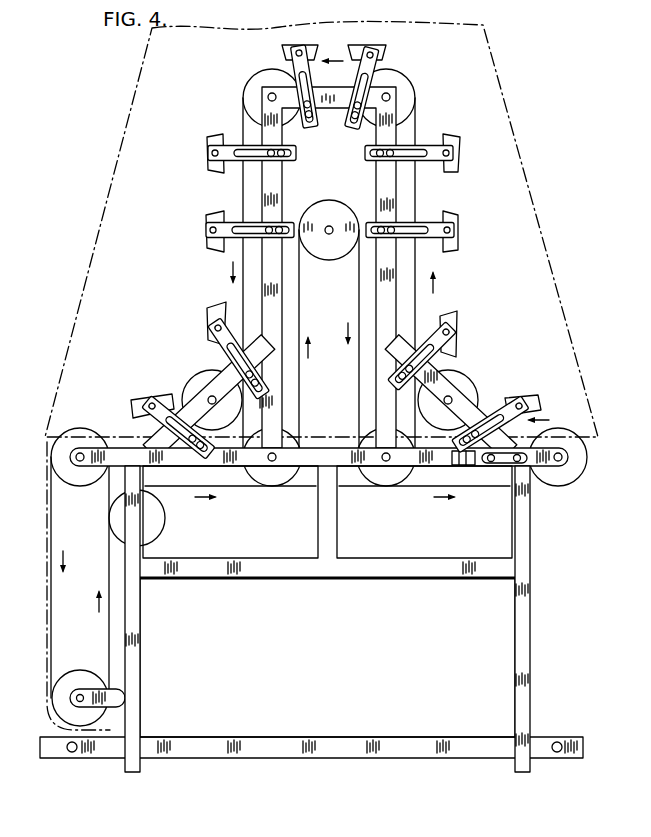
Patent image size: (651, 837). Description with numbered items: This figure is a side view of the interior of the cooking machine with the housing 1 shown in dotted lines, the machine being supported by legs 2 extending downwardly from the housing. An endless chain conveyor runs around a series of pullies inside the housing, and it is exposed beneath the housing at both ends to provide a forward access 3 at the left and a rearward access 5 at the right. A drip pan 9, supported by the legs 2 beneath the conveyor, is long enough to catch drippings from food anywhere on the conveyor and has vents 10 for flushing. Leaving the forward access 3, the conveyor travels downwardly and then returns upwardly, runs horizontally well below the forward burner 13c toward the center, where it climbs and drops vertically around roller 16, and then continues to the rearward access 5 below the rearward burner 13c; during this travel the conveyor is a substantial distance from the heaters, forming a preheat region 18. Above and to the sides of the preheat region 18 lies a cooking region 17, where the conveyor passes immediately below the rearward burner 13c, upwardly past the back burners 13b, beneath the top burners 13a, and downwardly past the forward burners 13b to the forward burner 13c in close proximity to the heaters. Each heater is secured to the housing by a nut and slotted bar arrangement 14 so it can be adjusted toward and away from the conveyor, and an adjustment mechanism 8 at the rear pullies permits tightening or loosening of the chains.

The housing 1 is at (539, 224).
The legs 2 is at (140, 648).
The forward access 3 is at (49, 552).
The rearward access 5 is at (581, 469).
The adjustment mechanism 8 is at (468, 468).
The drip pan 9 is at (292, 738).
The vents 10 is at (76, 753).
The top burners 13a is at (283, 50).
The back and forward burners 13b is at (209, 152).
The rearward and forward burners 13c is at (145, 397).
The nut and slotted bar arrangement 14 is at (236, 147).
The roller 16 is at (333, 206).
The cooking region 17 is at (320, 178).
The preheat region 18 is at (330, 296).